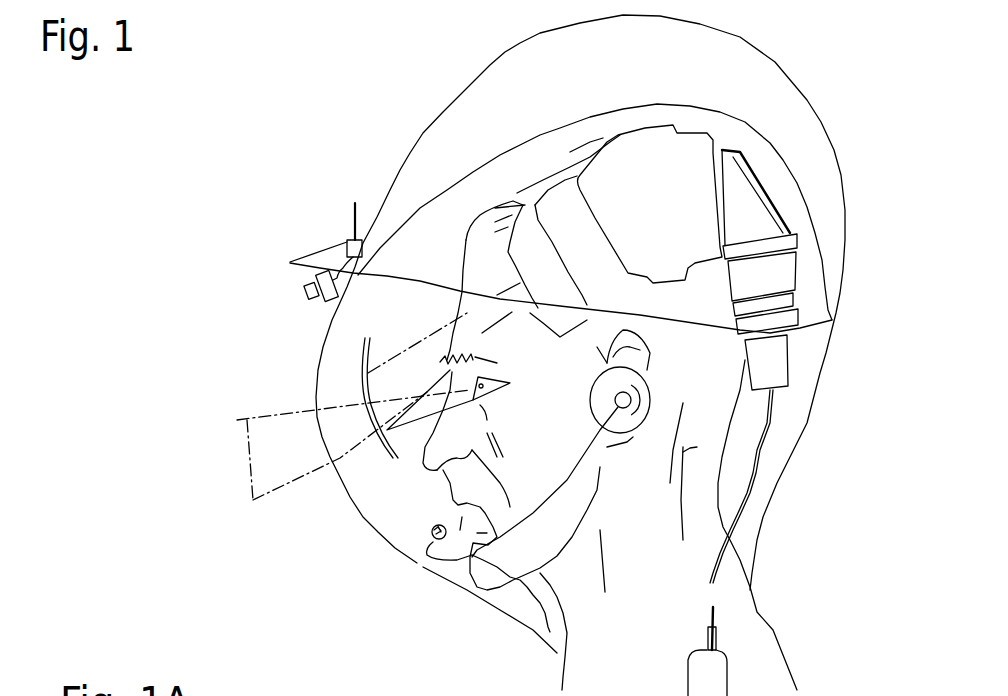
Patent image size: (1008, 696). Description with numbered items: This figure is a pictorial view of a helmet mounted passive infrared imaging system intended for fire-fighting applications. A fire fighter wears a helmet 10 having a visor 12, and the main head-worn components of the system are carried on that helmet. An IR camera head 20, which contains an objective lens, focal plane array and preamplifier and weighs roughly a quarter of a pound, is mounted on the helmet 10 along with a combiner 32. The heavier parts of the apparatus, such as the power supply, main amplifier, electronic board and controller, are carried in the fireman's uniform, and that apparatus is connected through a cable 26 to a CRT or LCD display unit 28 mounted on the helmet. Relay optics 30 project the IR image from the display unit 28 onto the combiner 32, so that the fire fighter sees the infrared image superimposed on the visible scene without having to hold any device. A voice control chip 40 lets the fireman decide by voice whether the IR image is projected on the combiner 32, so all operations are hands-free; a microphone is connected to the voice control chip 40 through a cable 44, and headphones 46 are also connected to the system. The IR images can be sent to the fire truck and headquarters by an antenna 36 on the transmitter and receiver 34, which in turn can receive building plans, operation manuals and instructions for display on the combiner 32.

The helmet 10 is at (633, 49).
The visor 12 is at (312, 363).
The IR camera head 20 is at (303, 292).
The cable 26 is at (747, 513).
The display unit 28 is at (793, 353).
The relay optics 30 is at (678, 174).
The combiner 32 is at (380, 383).
The transmitter and receiver 34 is at (350, 225).
The antenna 36 is at (338, 265).
The voice control chip 40 is at (420, 531).
The cable 44 is at (533, 603).
The headphones 46 is at (582, 397).